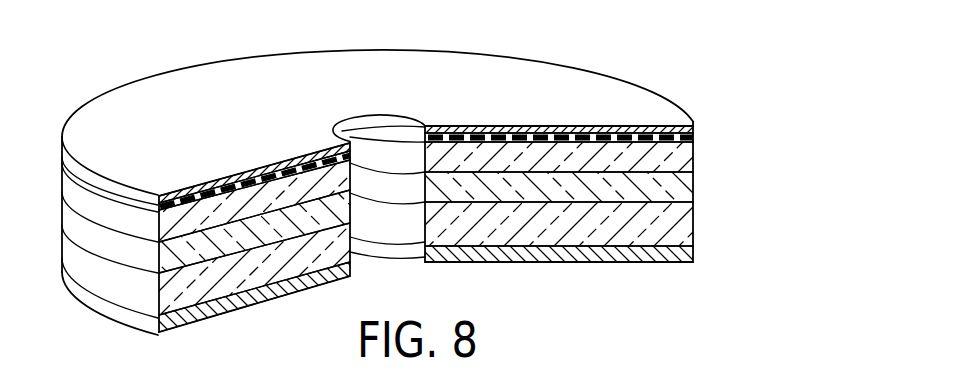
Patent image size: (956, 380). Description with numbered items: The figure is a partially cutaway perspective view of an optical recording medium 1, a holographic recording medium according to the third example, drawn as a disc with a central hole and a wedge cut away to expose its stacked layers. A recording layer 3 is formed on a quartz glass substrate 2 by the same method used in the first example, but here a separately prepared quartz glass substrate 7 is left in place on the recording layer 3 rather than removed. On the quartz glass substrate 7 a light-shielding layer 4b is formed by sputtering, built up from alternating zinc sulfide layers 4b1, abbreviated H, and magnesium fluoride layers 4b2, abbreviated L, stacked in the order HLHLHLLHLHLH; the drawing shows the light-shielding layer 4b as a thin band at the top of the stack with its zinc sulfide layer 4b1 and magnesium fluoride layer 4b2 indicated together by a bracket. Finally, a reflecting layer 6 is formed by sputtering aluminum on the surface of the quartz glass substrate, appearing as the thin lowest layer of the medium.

The optical recording medium 1 is at (655, 73).
The quartz glass substrate 2 is at (688, 226).
The recording layer 3 is at (688, 187).
The light-shielding layer 4b is at (414, 190).
The zinc sulfide layer 4b1 is at (695, 138).
The magnesium fluoride layer 4b2 is at (695, 129).
The reflecting layer 6 is at (688, 252).
The quartz glass substrate 7 is at (688, 157).